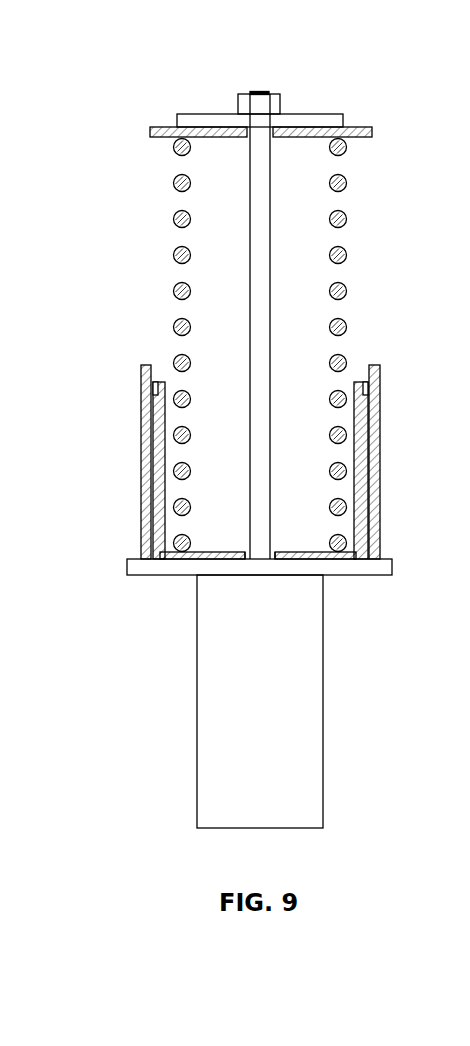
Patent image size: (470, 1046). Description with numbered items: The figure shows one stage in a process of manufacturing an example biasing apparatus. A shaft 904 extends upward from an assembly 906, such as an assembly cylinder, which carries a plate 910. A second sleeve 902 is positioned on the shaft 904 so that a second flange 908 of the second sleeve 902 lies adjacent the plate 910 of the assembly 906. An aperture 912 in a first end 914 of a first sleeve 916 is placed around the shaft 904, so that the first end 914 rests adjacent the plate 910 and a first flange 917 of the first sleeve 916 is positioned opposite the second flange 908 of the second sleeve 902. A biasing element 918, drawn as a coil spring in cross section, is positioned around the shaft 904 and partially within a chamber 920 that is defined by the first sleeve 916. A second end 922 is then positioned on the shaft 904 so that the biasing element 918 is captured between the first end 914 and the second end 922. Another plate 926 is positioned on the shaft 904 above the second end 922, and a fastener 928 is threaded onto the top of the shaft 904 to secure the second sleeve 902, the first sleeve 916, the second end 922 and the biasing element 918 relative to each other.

The second sleeve 902 is at (375, 432).
The shaft 904 is at (258, 265).
The assembly 906 is at (310, 773).
The second flange 908 is at (372, 550).
The plate 910 is at (367, 568).
The aperture 912 is at (242, 555).
The first end 914 is at (182, 553).
The first sleeve 916 is at (155, 453).
The first flange 917 is at (363, 382).
The biasing element 918 is at (339, 218).
The chamber 920 is at (217, 408).
The second end 922 is at (358, 129).
The plate 926 is at (190, 113).
The fastener 928 is at (273, 93).